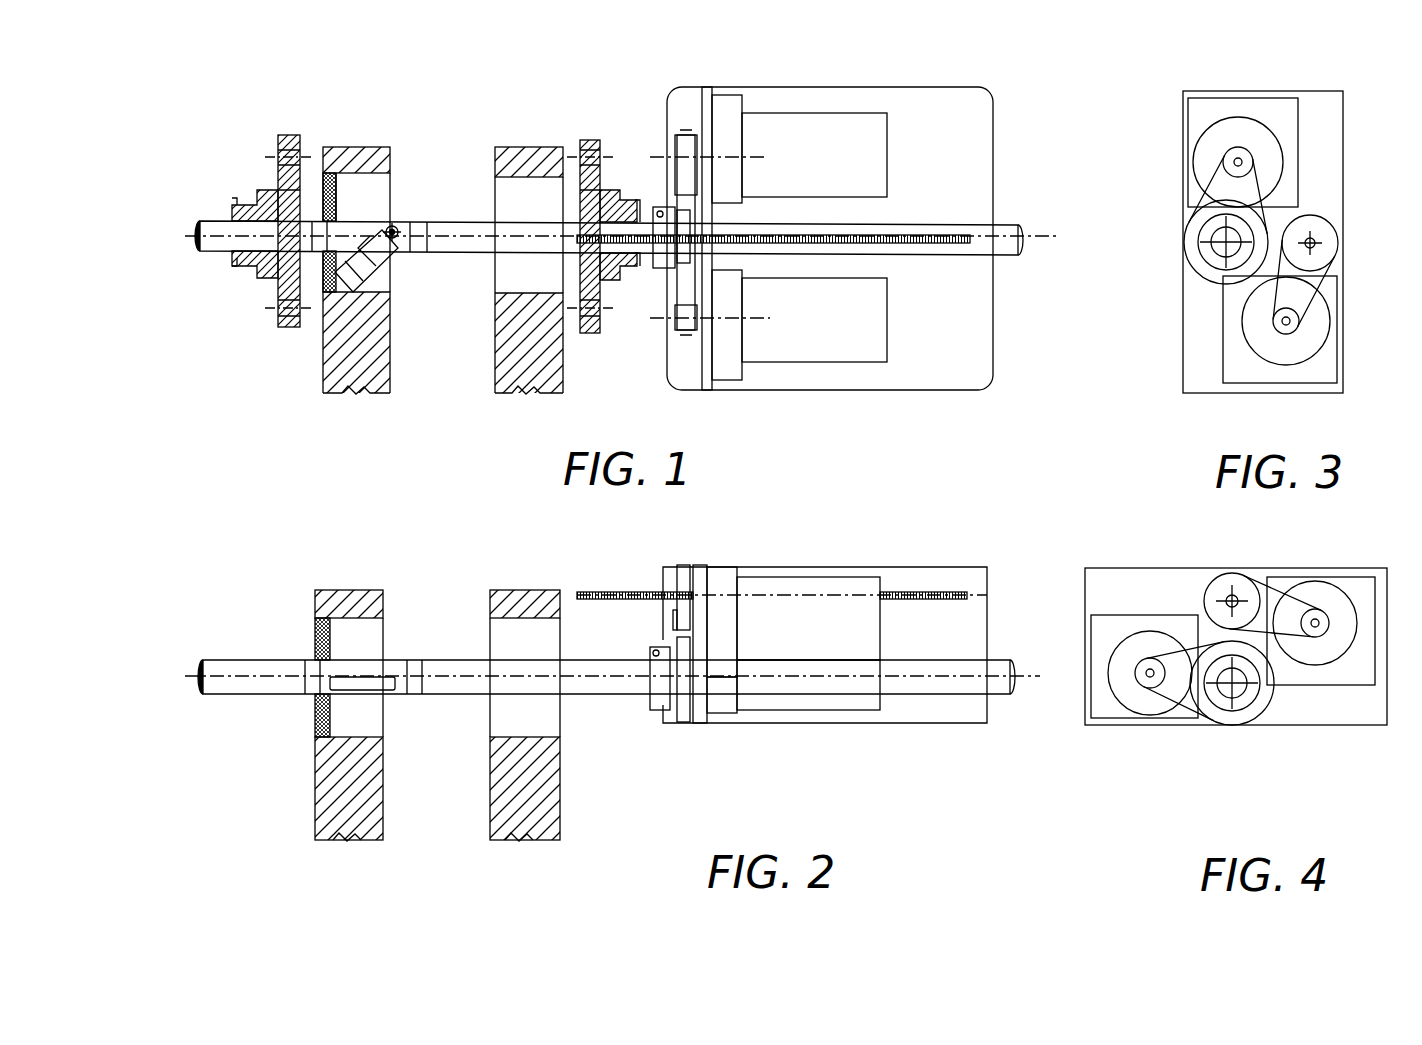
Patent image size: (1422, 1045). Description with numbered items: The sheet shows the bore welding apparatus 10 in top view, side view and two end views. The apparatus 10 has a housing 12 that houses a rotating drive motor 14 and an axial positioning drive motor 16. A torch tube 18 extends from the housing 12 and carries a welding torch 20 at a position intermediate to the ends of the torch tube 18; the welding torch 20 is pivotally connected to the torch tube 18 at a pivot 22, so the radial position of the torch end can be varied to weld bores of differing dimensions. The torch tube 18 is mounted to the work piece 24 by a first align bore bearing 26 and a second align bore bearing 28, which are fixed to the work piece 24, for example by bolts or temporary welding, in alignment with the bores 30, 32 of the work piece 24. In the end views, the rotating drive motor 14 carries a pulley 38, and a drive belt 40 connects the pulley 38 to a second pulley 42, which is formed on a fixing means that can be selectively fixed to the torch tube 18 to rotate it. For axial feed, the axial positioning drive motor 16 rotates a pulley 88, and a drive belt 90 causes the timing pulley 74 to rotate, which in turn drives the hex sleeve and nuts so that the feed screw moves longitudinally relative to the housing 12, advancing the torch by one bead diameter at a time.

In FIG. 1, the apparatus 10 is at (447, 105).
In FIG. 2, the apparatus 10 is at (682, 785).
In FIG. 1, the housing 12 is at (997, 103).
In FIG. 3, the housing 12 is at (1343, 177).
In FIG. 2, the housing 12 is at (922, 563).
In FIG. 4, the housing 12 is at (1343, 725).
In FIG. 1, the rotating drive motor 14 is at (857, 127).
In FIG. 2, the rotating drive motor 14 is at (815, 692).
In FIG. 1, the axial positioning drive motor 16 is at (867, 353).
In FIG. 2, the axial positioning drive motor 16 is at (812, 587).
In FIG. 1, the torch tube 18 is at (465, 222).
In FIG. 2, the torch tube 18 is at (247, 665).
In FIG. 4, the torch tube 18 is at (1223, 690).
In FIG. 1, the welding torch 20 is at (390, 248).
In FIG. 1, the pivot 22 is at (395, 220).
In FIG. 1, the work piece 24 is at (490, 388).
In FIG. 2, the work piece 24 is at (489, 834).
In FIG. 1, the first align bore bearing 26 is at (280, 190).
In FIG. 1, the second align bore bearing 28 is at (603, 187).
In FIG. 1, the bore 30 is at (372, 188).
In FIG. 2, the bore 30 is at (367, 638).
In FIG. 1, the bore 32 is at (490, 287).
In FIG. 2, the bore 32 is at (508, 631).
In FIG. 4, the pulley 38 is at (1143, 680).
In FIG. 4, the drive belt 40 is at (1183, 710).
In FIG. 4, the second pulley 42 is at (1261, 708).
In FIG. 3, the timing pulley 74 is at (1338, 243).
In FIG. 3, the pulley 88 is at (1292, 328).
In FIG. 3, the drive belt 90 is at (1323, 287).